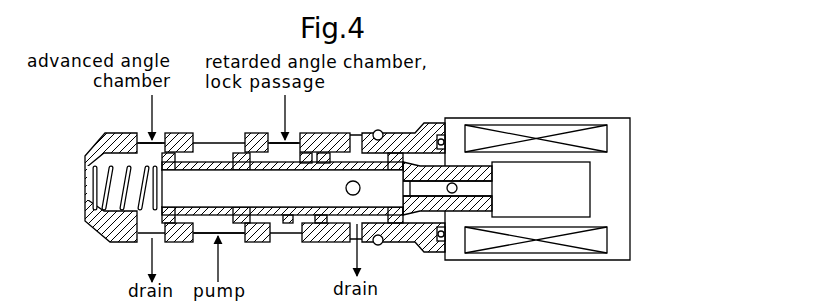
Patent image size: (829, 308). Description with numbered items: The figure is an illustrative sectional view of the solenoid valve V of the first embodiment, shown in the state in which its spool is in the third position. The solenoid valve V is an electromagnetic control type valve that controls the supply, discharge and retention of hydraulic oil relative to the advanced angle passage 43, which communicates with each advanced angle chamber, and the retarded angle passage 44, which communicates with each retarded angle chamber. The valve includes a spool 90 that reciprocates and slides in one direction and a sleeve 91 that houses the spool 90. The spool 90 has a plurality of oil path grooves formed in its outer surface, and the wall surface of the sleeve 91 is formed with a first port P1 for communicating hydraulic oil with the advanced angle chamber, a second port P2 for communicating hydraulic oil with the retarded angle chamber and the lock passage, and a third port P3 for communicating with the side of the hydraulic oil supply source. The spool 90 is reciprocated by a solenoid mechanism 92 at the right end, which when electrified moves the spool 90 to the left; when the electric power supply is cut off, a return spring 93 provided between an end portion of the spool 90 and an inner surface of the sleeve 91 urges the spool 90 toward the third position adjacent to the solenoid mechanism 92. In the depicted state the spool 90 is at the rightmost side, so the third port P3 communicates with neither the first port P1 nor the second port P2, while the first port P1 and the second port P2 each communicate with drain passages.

The solenoid valve V is at (314, 174).
The spool 90 is at (293, 223).
The sleeve 91 is at (117, 243).
The solenoid mechanism 92 is at (558, 118).
The return spring 93 is at (93, 188).
The advanced angle passage 43 is at (156, 112).
The retarded angle passage 44 is at (282, 118).
The first port P1 is at (143, 146).
The second port P2 is at (294, 144).
The third port P3 is at (226, 233).